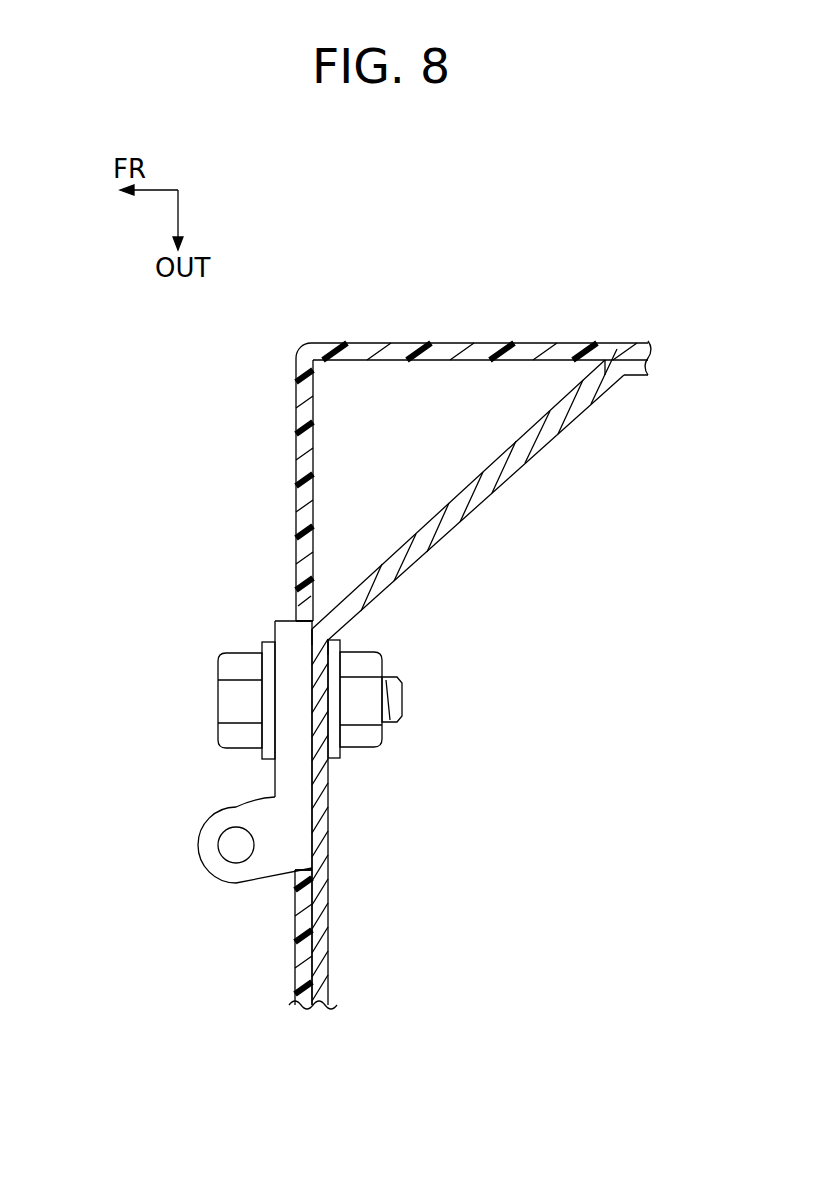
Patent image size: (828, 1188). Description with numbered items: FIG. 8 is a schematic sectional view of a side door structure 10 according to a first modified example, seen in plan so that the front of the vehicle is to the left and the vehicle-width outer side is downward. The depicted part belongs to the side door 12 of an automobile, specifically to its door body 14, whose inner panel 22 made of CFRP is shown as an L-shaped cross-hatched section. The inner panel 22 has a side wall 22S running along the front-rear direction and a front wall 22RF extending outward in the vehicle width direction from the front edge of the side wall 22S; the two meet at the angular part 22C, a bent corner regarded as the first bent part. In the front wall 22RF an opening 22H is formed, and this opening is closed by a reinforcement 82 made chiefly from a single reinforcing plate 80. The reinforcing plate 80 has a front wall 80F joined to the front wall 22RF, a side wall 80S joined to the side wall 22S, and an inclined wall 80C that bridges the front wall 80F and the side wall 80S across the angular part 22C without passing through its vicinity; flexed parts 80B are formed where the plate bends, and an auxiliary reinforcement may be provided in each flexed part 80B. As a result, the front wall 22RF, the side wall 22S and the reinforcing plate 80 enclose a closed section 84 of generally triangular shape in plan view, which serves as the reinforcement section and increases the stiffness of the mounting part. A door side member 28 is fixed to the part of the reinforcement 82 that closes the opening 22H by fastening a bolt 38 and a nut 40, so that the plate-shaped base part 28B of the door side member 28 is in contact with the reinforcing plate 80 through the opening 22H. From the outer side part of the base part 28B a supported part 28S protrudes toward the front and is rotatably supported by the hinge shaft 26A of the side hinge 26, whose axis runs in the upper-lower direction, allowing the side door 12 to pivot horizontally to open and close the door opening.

The side door structure 10 is at (494, 677).
The side door 12 is at (421, 603).
The door body 14 is at (421, 603).
The inner panel 22 is at (408, 625).
The angular part 22C is at (303, 346).
The side wall 22S is at (441, 346).
The front wall 22RF is at (301, 515).
The opening 22H is at (293, 608).
The side hinge 26 is at (215, 906).
The hinge shaft 26A is at (242, 850).
The door side member 28 is at (180, 752).
The base part 28B is at (283, 778).
The supported part 28S is at (205, 849).
The bolt 38 is at (403, 712).
The nut 40 is at (376, 744).
The reinforcing plate 80 is at (494, 677).
The reinforcement 82 is at (494, 677).
The side wall 80S is at (628, 366).
The inclined wall 80C is at (426, 540).
The flexed part 80B is at (335, 629).
The front wall 80F is at (318, 841).
The closed section 84 is at (393, 392).